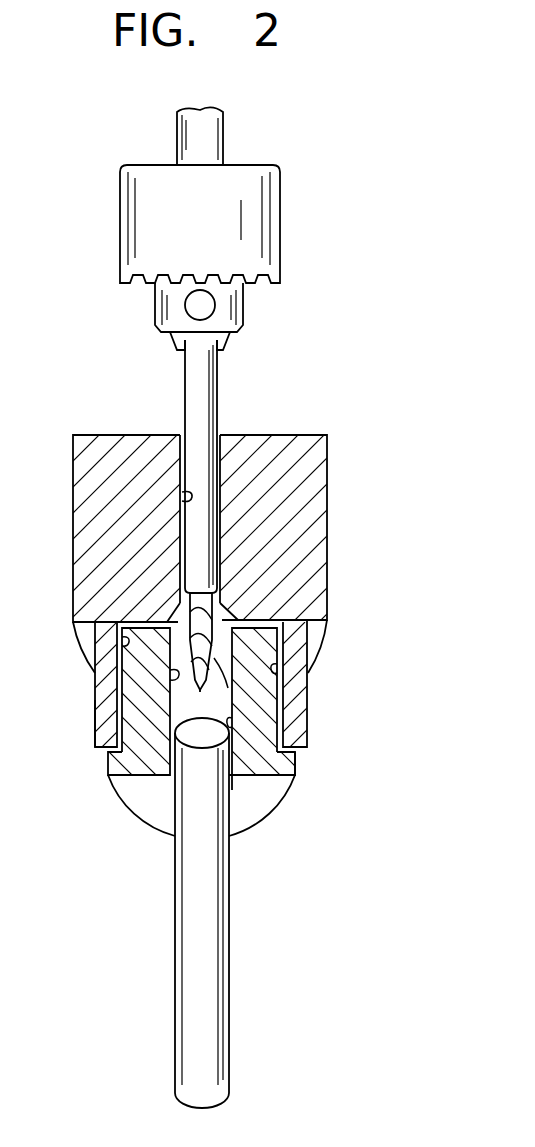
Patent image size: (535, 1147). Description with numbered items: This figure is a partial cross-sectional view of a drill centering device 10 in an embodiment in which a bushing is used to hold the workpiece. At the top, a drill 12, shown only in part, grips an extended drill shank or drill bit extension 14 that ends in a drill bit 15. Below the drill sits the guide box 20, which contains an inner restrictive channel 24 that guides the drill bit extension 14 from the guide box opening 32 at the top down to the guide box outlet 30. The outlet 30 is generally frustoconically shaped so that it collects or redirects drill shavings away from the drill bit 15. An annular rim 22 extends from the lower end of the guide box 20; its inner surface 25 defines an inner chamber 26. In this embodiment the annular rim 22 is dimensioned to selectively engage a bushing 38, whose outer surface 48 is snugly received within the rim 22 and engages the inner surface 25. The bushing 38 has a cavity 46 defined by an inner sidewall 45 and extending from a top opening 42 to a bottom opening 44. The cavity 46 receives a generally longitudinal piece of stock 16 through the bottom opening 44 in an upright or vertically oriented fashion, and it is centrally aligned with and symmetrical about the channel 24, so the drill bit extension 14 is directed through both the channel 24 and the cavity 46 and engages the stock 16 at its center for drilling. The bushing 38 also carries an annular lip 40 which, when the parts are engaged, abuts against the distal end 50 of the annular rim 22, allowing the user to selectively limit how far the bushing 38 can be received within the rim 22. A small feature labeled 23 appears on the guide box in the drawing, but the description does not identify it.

The drill centering device 10 is at (330, 308).
The drill 12 is at (263, 205).
The drill bit extension 14 is at (203, 377).
The drill bit 15 is at (228, 719).
The stock 16 is at (210, 978).
The guide box 20 is at (313, 508).
The annular rim 22 is at (297, 643).
The detent 23 is at (183, 500).
The inner restrictive channel 24 is at (180, 470).
The inner surface 25 is at (122, 641).
The inner chamber 26 is at (97, 715).
The guide box outlet 30 is at (225, 612).
The guide box opening 32 is at (180, 428).
The bushing 38 is at (157, 807).
The annular lip 40 is at (283, 767).
The top opening 42 is at (190, 636).
The bottom opening 44 is at (236, 783).
The inner sidewall 45 is at (170, 675).
The cavity 46 is at (228, 690).
The outer surface 48 is at (110, 741).
The distal end 50 is at (298, 753).